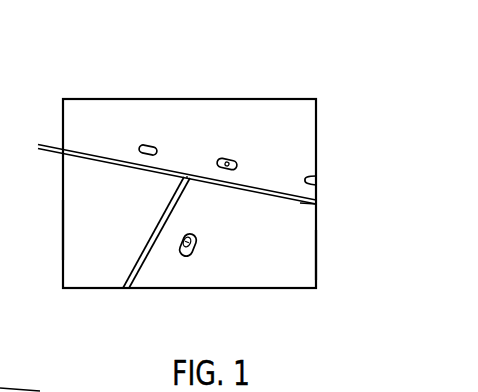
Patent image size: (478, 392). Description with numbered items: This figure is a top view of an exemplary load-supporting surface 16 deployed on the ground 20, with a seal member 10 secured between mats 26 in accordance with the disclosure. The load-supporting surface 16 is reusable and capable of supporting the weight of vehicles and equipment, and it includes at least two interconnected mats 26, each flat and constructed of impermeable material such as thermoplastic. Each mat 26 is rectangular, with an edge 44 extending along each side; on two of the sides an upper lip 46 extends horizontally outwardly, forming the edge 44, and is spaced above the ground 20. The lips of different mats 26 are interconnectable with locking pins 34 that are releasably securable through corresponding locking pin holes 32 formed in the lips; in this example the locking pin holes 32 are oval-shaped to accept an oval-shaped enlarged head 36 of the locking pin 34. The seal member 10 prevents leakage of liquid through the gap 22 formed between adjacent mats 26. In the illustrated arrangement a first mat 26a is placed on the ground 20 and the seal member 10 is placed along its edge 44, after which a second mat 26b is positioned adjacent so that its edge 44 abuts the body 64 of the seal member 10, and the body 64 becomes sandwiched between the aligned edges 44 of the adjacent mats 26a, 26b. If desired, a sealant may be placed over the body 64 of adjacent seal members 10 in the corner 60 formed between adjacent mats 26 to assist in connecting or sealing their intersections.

The seal member 10 is at (125, 291).
The load-supporting surface 16 is at (239, 78).
The ground 20 is at (48, 381).
The gap 22 is at (43, 162).
The mat 26 is at (316, 122).
The first mat 26a is at (63, 238).
The second mat 26b is at (316, 253).
The locking pin hole 32 is at (146, 146).
The locking pin 34 is at (187, 258).
The enlarged head 36 is at (195, 256).
The edge 44 is at (269, 184).
The upper lip 46 is at (150, 266).
The corner 60 is at (170, 188).
The body 64 is at (318, 203).